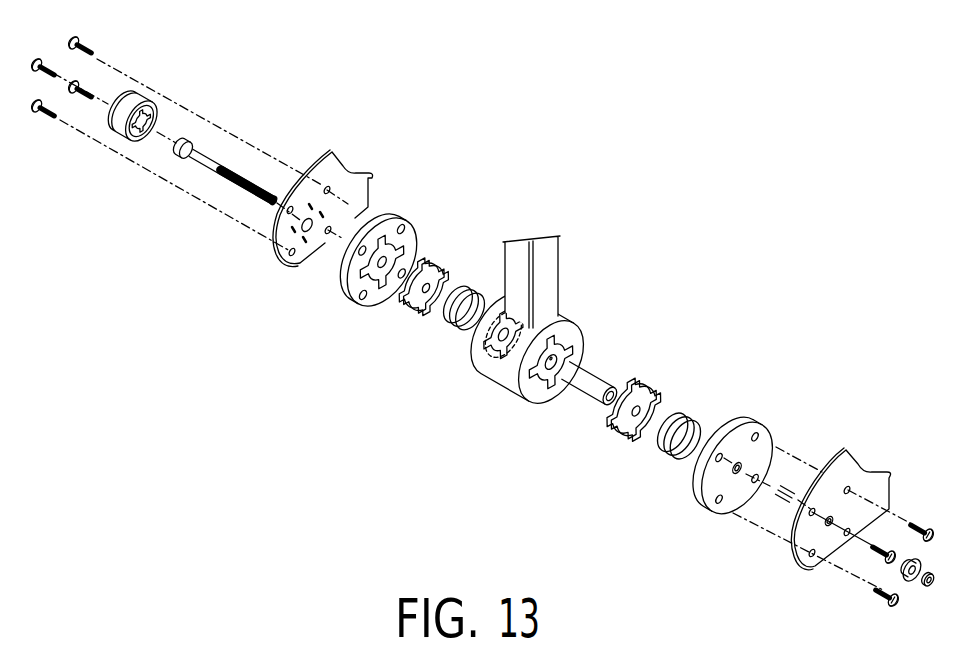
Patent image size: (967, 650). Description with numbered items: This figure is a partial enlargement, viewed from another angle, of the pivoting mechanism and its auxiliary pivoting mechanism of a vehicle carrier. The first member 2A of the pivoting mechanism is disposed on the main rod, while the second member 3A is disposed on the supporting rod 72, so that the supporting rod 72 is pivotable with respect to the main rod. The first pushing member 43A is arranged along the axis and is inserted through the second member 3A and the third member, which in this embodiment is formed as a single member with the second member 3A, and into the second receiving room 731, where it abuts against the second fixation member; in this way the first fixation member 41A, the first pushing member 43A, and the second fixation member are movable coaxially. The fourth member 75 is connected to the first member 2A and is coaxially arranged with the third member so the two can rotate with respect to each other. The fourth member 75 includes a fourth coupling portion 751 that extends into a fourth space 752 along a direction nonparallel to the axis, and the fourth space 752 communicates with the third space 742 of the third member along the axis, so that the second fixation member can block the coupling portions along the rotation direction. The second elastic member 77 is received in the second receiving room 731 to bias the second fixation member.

The first member 2A is at (815, 403).
The second member 3A is at (533, 393).
The first fixation member 41A is at (662, 392).
The first pushing member 43A is at (600, 378).
The supporting rod 72 is at (543, 267).
The fourth member 75 is at (292, 302).
The second elastic member 77 is at (465, 290).
The second receiving room 731 is at (270, 363).
The third space 742 is at (452, 349).
The fourth coupling portion 751 is at (391, 233).
The fourth space 752 is at (373, 300).